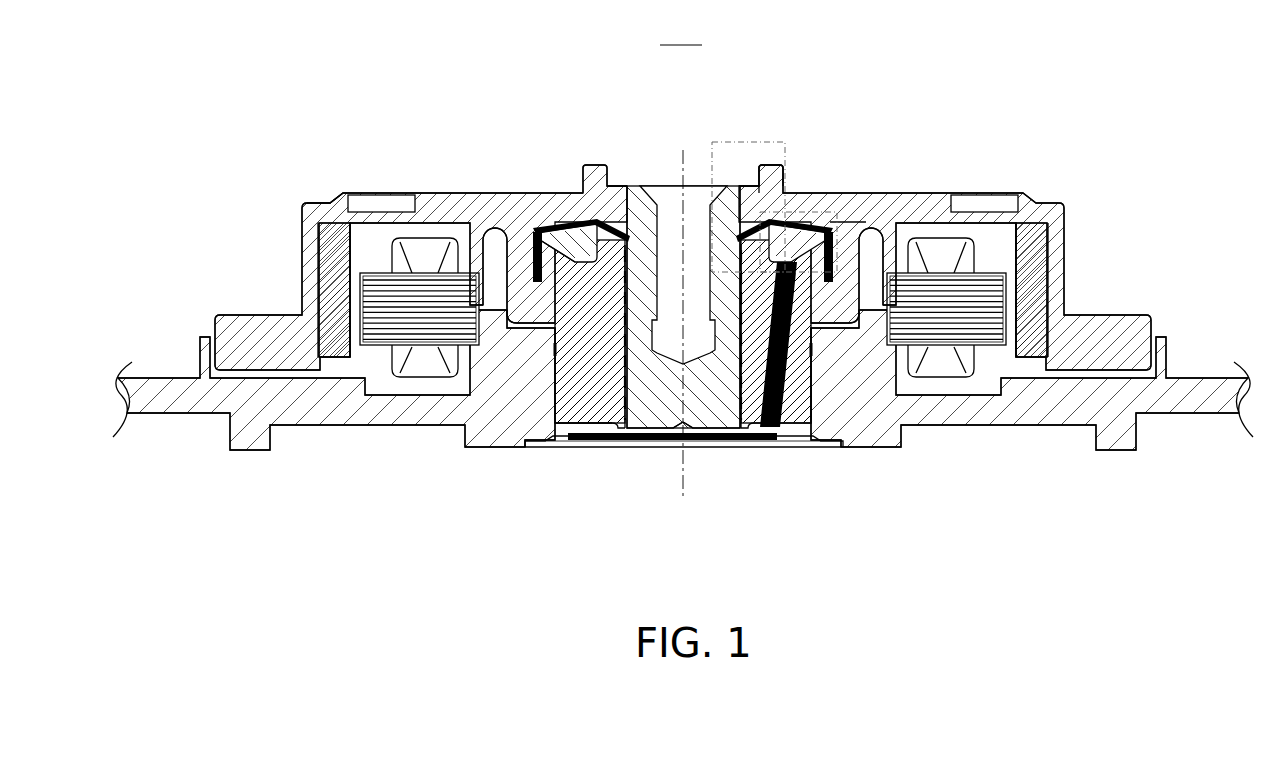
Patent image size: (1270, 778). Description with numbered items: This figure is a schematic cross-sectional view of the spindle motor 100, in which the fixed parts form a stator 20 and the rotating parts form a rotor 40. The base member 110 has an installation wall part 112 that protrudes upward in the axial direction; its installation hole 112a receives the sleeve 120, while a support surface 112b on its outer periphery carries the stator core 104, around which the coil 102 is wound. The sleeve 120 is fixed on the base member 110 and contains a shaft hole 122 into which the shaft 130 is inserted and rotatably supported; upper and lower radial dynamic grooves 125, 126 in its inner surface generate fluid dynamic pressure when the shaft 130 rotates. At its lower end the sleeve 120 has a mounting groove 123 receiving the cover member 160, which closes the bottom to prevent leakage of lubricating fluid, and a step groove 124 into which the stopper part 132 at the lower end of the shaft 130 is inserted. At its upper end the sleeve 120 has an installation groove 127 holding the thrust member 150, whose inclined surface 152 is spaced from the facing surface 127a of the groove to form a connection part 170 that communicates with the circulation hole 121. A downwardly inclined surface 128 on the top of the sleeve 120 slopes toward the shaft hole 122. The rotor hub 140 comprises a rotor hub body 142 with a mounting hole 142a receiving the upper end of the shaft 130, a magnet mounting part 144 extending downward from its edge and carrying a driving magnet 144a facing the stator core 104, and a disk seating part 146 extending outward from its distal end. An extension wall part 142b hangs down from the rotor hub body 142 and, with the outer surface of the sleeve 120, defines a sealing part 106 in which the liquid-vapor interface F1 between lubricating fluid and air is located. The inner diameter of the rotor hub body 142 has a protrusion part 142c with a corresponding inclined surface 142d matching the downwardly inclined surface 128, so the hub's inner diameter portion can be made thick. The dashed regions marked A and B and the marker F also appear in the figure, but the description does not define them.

The spindle motor 100 is at (682, 32).
The stator 20 is at (1158, 447).
The rotor 40 is at (295, 174).
The base member 110 is at (1042, 425).
The coil 102 is at (946, 393).
The stator core 104 is at (975, 345).
The sealing part 106 is at (533, 335).
The installation wall part 112 is at (812, 385).
The installation hole 112a is at (777, 402).
The support surface 112b is at (847, 372).
The sleeve 120 is at (612, 441).
The circulation hole 121 is at (750, 430).
The shaft hole 122 is at (598, 415).
The mounting groove 123 is at (592, 443).
The step groove 124 is at (612, 433).
The upper radial dynamic groove 125 is at (632, 245).
The lower radial dynamic groove 126 is at (706, 441).
The installation groove 127 is at (590, 232).
The facing surface 127a is at (550, 345).
The downwardly inclined surface 128 is at (645, 200).
The shaft 130 is at (650, 438).
The stopper part 132 is at (742, 445).
The rotor hub 140 is at (683, 202).
The rotor hub body 142 is at (935, 195).
The mounting hole 142a is at (717, 197).
The extension wall part 142b is at (503, 238).
The protrusion part 142c is at (788, 197).
The corresponding inclined surface 142d is at (845, 193).
The magnet mounting part 144 is at (1070, 225).
The driving magnet 144a is at (326, 276).
The disk seating part 146 is at (1123, 323).
The thrust member 150 is at (573, 224).
The inclined surface 152 is at (880, 210).
The cover member 160 is at (713, 432).
The connection part 170 is at (575, 440).
The enlarged region A is at (838, 212).
The enlarged region B is at (767, 142).
The fluid F is at (790, 428).
The liquid-vapor interface F1 is at (540, 250).